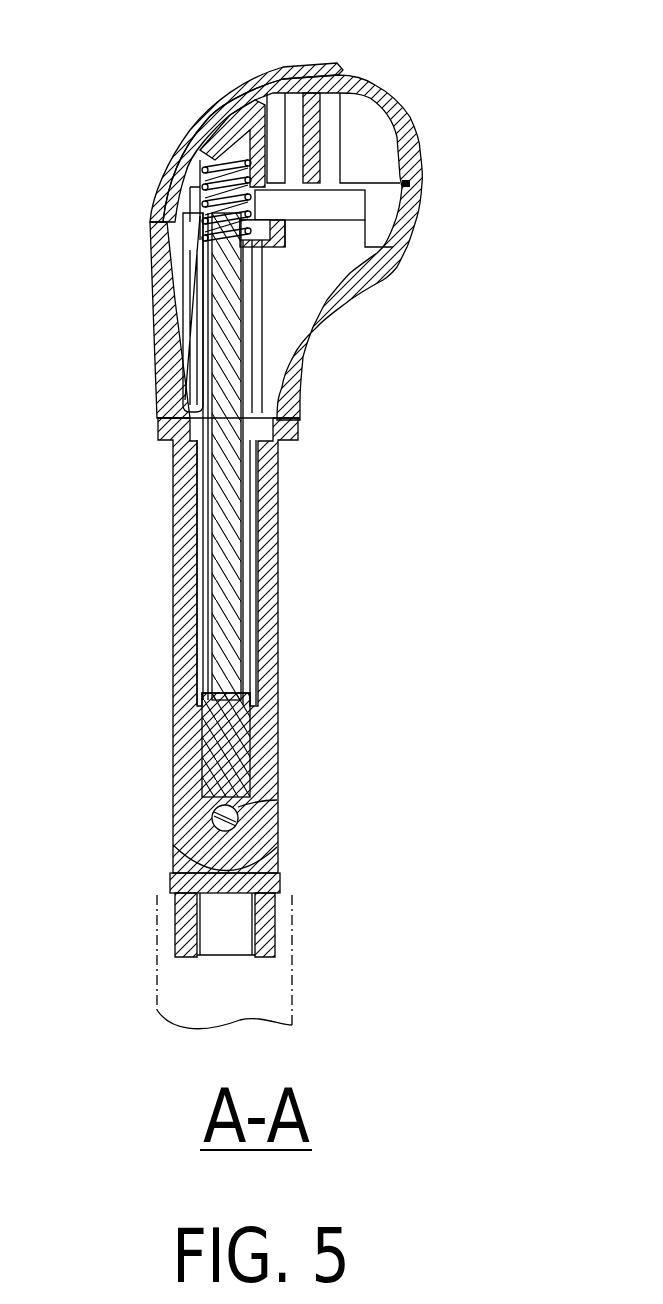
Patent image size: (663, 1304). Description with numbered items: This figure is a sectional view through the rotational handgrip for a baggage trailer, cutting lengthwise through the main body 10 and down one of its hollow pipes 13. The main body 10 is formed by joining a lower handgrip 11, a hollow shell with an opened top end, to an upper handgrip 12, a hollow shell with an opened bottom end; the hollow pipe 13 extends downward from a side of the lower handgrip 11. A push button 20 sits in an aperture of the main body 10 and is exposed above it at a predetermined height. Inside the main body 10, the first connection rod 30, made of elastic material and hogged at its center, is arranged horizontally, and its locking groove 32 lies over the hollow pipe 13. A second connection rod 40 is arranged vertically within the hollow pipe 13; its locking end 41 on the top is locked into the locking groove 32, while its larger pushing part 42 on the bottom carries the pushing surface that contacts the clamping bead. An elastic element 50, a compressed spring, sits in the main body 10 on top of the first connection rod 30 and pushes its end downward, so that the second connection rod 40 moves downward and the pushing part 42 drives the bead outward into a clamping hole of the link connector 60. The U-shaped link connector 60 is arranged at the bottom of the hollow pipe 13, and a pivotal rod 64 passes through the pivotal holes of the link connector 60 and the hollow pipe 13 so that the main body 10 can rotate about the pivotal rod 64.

The main body 10 is at (430, 101).
The lower handgrip 11 is at (313, 323).
The upper handgrip 12 is at (407, 128).
The hollow pipe 13 is at (267, 562).
The push button 20 is at (260, 80).
The first connection rod 30 is at (290, 234).
The locking groove 32 is at (255, 250).
The second connection rod 40 is at (223, 627).
The locking end 41 is at (203, 250).
The pushing part 42 is at (220, 748).
The elastic element 50 is at (230, 165).
The link connector 60 is at (268, 890).
The pivotal rod 64 is at (238, 812).